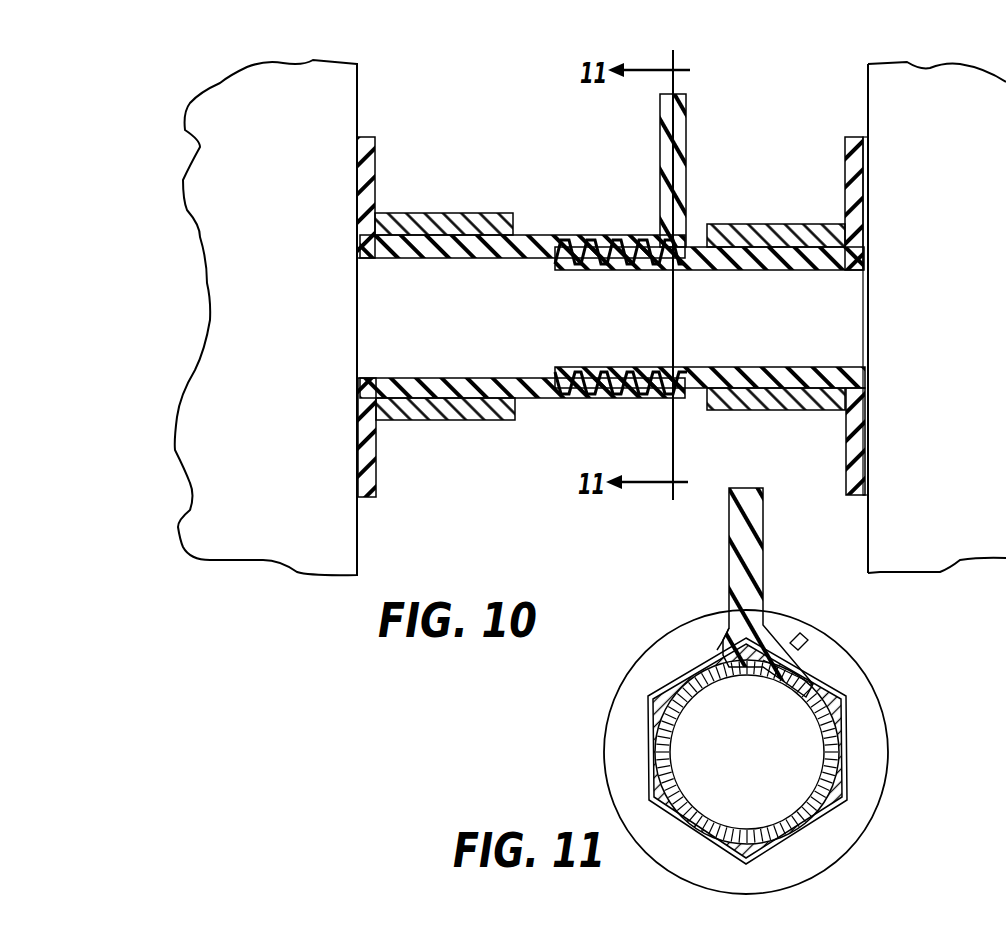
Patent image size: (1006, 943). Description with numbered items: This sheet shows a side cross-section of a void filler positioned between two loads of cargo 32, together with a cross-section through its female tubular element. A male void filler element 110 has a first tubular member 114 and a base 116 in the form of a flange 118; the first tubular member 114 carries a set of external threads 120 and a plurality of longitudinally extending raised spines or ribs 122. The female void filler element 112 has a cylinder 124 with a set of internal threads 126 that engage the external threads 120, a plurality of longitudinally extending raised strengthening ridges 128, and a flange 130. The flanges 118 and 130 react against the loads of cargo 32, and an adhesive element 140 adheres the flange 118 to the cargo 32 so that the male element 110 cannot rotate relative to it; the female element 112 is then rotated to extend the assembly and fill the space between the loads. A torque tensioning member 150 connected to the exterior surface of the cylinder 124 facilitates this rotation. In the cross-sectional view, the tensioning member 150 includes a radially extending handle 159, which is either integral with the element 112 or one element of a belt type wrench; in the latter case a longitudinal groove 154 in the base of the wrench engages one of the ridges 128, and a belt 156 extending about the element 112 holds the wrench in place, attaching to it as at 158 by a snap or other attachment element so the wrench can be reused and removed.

In FIG. 10, the loads of cargo 32 is at (292, 318).
In FIG. 10, the male void filler element 110 is at (817, 390).
In FIG. 10, the female void filler element 112 is at (412, 420).
In FIG. 10, the first tubular member 114 is at (733, 247).
In FIG. 10, the base 116 is at (864, 499).
In FIG. 10, the flange 118 is at (850, 137).
In FIG. 10, the external threads 120 is at (650, 240).
In FIG. 10, the raised spines or ribs 122 is at (803, 224).
In FIG. 10, the cylinder 124 is at (498, 213).
In FIG. 11, the cylinder 124 is at (838, 773).
In FIG. 10, the internal threads 126 is at (633, 370).
In FIG. 10, the raised strengthening ridges 128 is at (408, 213).
In FIG. 11, the raised strengthening ridges 128 is at (681, 712).
In FIG. 10, the flange 130 is at (378, 138).
In FIG. 11, the flange 130 is at (887, 743).
In FIG. 10, the adhesive element 140 is at (870, 197).
In FIG. 10, the torque tensioning member 150 is at (686, 140).
In FIG. 11, the torque tensioning member 150 is at (676, 540).
In FIG. 11, the longitudinal groove 154 is at (766, 668).
In FIG. 11, the belt 156 is at (812, 837).
In FIG. 11, the attachment element 158 is at (800, 643).
In FIG. 11, the radially extending handle 159 is at (727, 583).